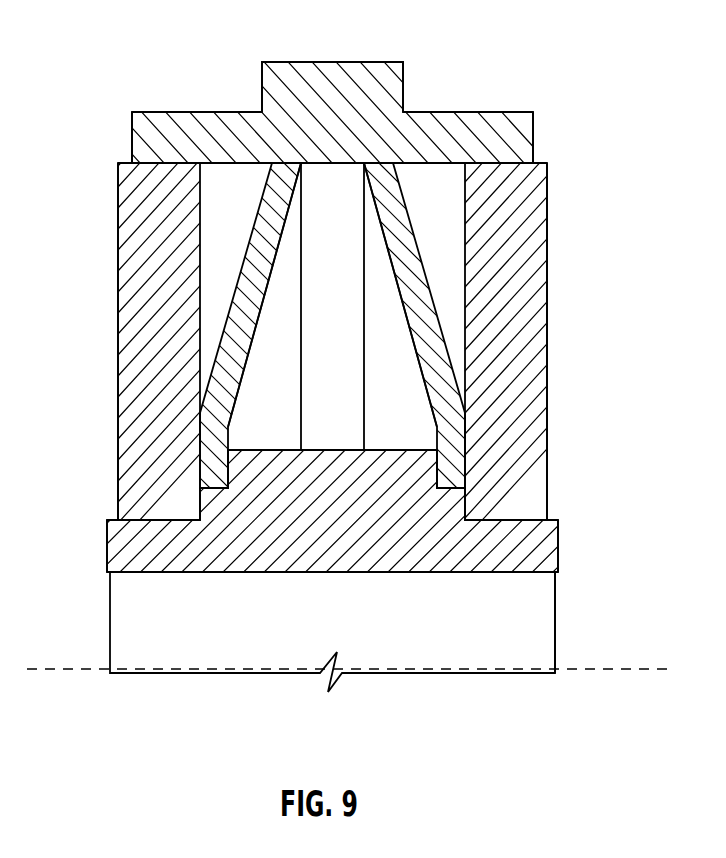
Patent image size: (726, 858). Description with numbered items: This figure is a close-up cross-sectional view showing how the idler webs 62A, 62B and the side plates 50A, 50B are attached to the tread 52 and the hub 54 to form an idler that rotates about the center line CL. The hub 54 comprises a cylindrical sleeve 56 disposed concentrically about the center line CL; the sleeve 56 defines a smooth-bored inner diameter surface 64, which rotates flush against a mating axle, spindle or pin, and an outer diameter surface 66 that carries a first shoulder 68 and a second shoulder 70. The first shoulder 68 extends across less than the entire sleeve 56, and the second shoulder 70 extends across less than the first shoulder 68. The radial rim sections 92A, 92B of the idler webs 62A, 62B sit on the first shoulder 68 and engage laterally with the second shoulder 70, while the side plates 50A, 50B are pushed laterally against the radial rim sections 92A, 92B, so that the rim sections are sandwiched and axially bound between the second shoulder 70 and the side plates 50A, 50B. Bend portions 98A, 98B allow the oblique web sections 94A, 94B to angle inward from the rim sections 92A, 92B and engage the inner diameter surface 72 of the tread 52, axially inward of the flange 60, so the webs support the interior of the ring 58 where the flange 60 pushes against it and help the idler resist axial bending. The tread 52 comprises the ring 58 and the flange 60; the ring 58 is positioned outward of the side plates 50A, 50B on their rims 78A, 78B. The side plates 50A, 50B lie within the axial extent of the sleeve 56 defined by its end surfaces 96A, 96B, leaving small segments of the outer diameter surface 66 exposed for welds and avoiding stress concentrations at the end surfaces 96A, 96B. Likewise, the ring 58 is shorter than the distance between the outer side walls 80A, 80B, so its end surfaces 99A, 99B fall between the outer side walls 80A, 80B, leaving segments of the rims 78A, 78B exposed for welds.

The tread 52 is at (475, 108).
The hub 54 is at (566, 531).
The cylindrical sleeve 56 is at (123, 592).
The ring 58 is at (533, 133).
The flange 60 is at (327, 75).
The inner diameter surface 64 is at (542, 623).
The outer diameter surface 66 is at (549, 520).
The first shoulder 68 is at (215, 503).
The second shoulder 70 is at (287, 450).
The inner diameter surface 72 is at (221, 173).
The first rim 78A is at (130, 163).
The second rim 78B is at (533, 165).
The first side plate 50A is at (138, 248).
The second side plate 50B is at (530, 260).
The first outer side wall 80A is at (118, 287).
The second outer side wall 80B is at (547, 220).
The first idler web 62A is at (236, 254).
The second idler web 62B is at (414, 246).
The first oblique web section 94A is at (232, 347).
The second oblique web section 94B is at (433, 347).
The first bend portion 98A is at (215, 443).
The second bend portion 98B is at (450, 418).
The first radial rim section 92A is at (210, 473).
The second radial rim section 92B is at (452, 457).
The first end surface 96A is at (107, 557).
The second end surface 96B is at (558, 552).
The first end surface 99A is at (132, 122).
The second end surface 99B is at (533, 115).
The center line CL is at (647, 669).